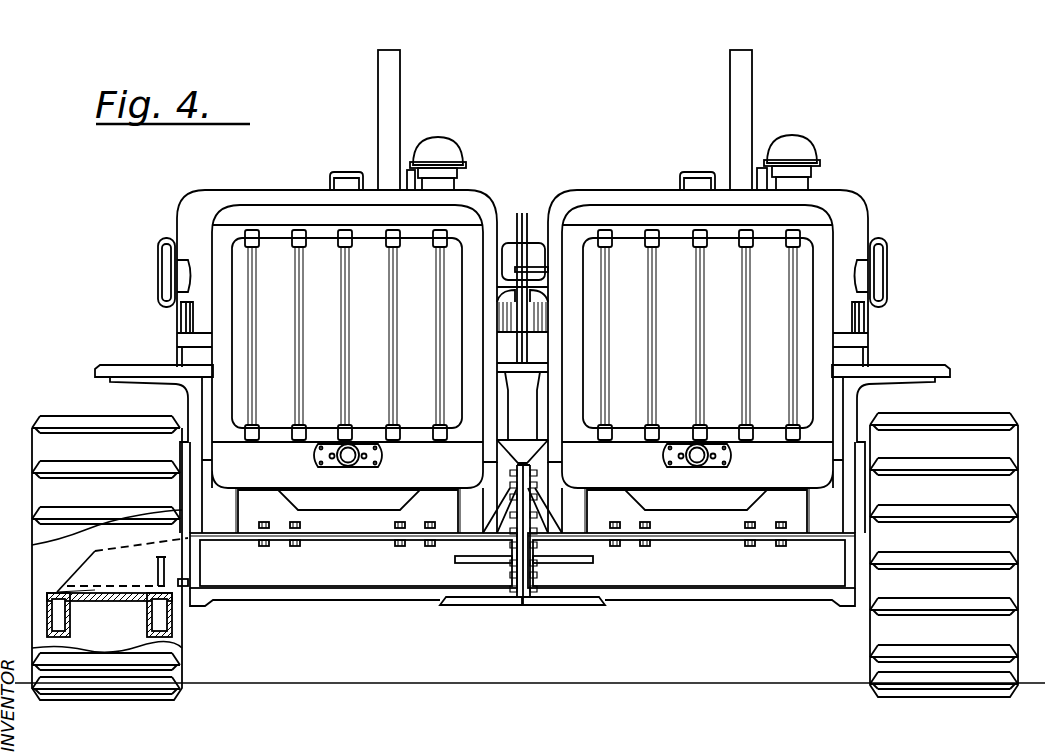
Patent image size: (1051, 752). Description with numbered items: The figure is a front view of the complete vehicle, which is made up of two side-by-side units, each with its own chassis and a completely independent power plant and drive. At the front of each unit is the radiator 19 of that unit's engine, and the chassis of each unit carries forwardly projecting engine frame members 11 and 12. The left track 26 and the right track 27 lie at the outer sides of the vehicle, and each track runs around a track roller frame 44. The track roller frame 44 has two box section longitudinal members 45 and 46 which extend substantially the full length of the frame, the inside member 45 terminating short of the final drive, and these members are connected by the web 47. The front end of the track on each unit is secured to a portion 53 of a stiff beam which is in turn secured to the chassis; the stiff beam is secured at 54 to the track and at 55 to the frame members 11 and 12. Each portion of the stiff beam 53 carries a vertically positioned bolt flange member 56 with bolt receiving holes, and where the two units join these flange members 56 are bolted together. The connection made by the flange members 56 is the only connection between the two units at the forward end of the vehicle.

The radiator 19 is at (322, 246).
The engine frame member 11 is at (227, 503).
The engine frame member 12 is at (458, 503).
The right track 27 is at (63, 418).
The left track 26 is at (950, 417).
The stiff beam portion 53 is at (338, 578).
The beam-to-frame securing point 55 is at (375, 536).
The bolt flange member 56 is at (515, 575).
The beam-to-track securing point 54 is at (101, 592).
The web 47 is at (79, 601).
The outside box section longitudinal member 46 is at (47, 626).
The inside box section longitudinal member 45 is at (147, 619).
The track roller frame 44 is at (57, 584).